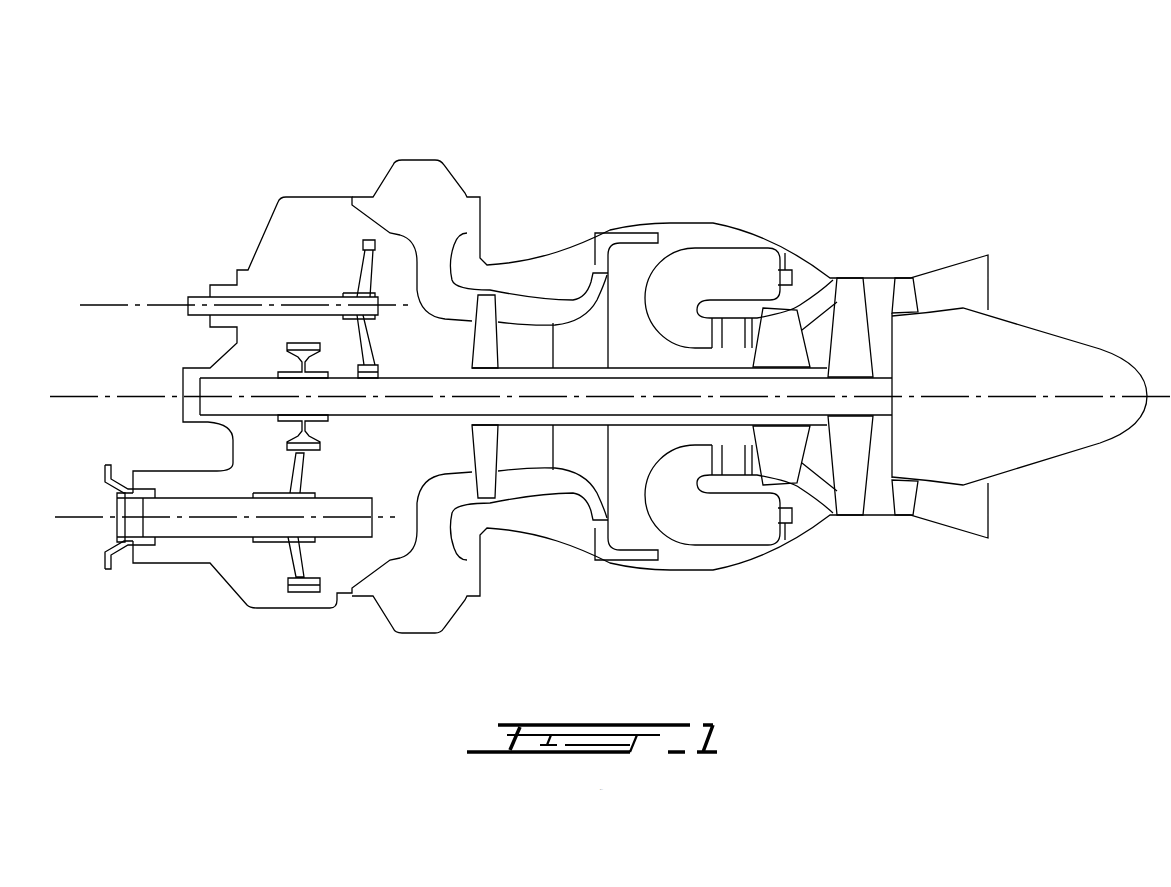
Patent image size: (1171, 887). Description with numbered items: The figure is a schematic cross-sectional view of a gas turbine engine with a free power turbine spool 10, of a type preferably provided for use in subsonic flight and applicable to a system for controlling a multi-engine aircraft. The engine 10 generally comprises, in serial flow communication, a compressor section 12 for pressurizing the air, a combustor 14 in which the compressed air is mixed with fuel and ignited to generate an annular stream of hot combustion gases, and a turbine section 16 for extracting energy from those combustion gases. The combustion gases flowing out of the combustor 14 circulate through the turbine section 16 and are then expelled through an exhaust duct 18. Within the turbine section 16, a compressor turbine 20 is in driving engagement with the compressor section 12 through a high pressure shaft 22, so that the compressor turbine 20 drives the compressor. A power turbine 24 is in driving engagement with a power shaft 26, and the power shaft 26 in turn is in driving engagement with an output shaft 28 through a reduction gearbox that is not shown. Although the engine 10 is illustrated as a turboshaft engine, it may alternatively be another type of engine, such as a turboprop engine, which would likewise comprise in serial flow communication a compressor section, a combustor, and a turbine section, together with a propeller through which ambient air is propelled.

The gas turbine engine with a free power turbine spool 10 is at (962, 153).
The compressor section 12 is at (582, 335).
The combustor 14 is at (708, 270).
The turbine section 16 is at (818, 460).
The exhaust duct 18 is at (882, 292).
The compressor turbine 20 is at (780, 460).
The high pressure shaft 22 is at (638, 367).
The power turbine 24 is at (851, 300).
The power shaft 26 is at (405, 415).
The output shaft 28 is at (177, 525).